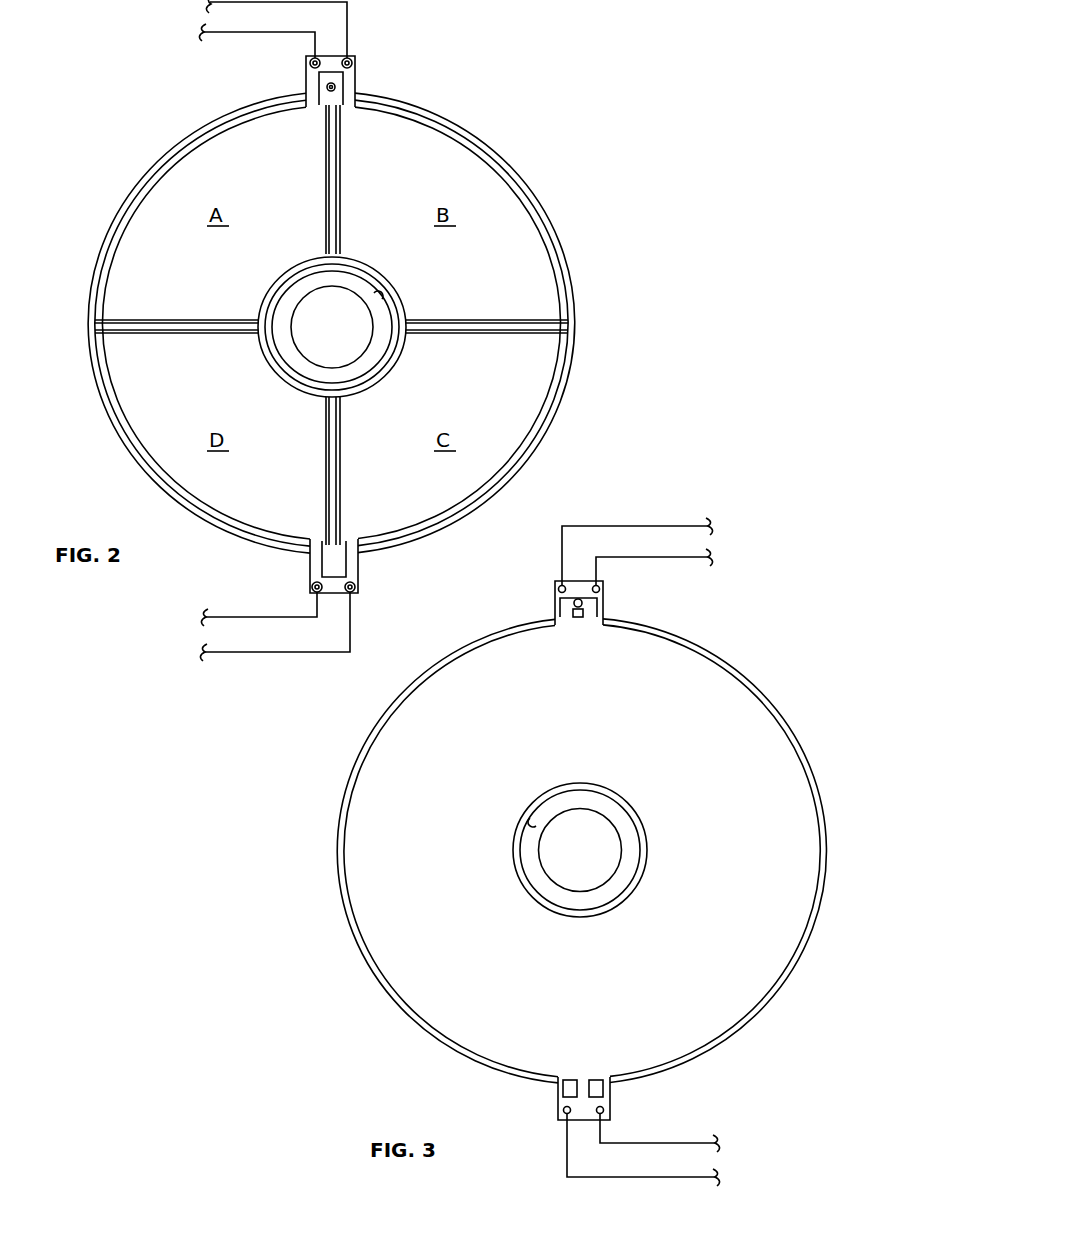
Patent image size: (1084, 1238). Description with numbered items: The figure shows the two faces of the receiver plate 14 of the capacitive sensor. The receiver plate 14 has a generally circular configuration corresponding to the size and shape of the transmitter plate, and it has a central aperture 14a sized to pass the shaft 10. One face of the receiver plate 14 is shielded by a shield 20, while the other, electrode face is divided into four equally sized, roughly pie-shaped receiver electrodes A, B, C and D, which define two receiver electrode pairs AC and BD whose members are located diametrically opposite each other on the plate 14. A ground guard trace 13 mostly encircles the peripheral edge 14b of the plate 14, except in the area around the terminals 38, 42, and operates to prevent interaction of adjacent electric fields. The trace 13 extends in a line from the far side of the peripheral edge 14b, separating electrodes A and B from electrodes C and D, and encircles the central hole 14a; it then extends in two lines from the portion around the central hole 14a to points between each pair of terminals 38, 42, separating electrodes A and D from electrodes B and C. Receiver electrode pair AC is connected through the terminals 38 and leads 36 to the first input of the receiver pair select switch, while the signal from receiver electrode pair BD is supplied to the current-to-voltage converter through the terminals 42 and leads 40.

In FIG. 2, the shaft 10 is at (340, 298).
In FIG. 3, the shaft 10 is at (570, 818).
In FIG. 2, the ground guard trace 13 is at (528, 327).
In FIG. 3, the ground guard trace 13 is at (555, 606).
In FIG. 2, the receiver plate 14 is at (140, 163).
In FIG. 3, the receiver plate 14 is at (742, 660).
In FIG. 2, the central aperture 14a is at (385, 301).
In FIG. 3, the central aperture 14a is at (528, 822).
In FIG. 2, the peripheral edge 14b is at (198, 123).
In FIG. 3, the peripheral edge 14b is at (405, 1010).
In FIG. 3, the shield 20 is at (397, 866).
In FIG. 2, the leads 36 is at (223, 33).
In FIG. 3, the leads 36 is at (708, 558).
In FIG. 2, the terminals 38 is at (310, 62).
In FIG. 3, the terminals 38 is at (600, 589).
In FIG. 2, the leads 40 is at (213, 3).
In FIG. 3, the leads 40 is at (708, 528).
In FIG. 2, the terminals 42 is at (353, 62).
In FIG. 3, the terminals 42 is at (558, 589).